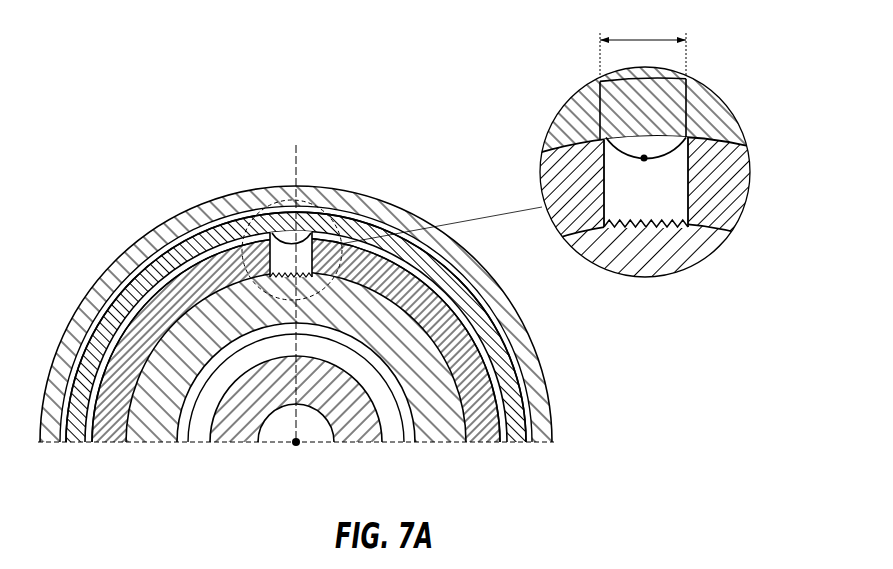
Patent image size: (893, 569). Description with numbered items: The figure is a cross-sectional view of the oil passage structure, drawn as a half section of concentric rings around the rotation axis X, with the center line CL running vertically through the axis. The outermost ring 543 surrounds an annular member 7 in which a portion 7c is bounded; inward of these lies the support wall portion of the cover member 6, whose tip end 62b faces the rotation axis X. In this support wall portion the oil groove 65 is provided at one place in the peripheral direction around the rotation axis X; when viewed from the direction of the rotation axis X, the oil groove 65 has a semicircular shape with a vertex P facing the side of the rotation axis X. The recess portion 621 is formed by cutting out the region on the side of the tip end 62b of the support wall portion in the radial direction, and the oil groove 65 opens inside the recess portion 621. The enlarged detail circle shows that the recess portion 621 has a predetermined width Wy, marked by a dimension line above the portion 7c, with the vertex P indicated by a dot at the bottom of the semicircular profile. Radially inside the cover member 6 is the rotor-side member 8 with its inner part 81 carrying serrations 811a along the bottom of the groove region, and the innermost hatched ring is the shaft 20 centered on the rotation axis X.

The housing outer ring 543 is at (213, 203).
The outer member 7 is at (393, 233).
The protrusion of outer member 7c is at (657, 139).
The recess portion 621 is at (262, 258).
The tip end 62b is at (330, 279).
The cover member 6 is at (455, 284).
The oil groove 65 is at (627, 146).
The rotor 8 is at (463, 398).
The rotor core 81 is at (688, 253).
The serrations 811a is at (618, 228).
The shaft 20 is at (237, 428).
The rotation axis X is at (298, 445).
The vertex P is at (645, 161).
The center line CL is at (297, 282).
The width Wy is at (643, 40).